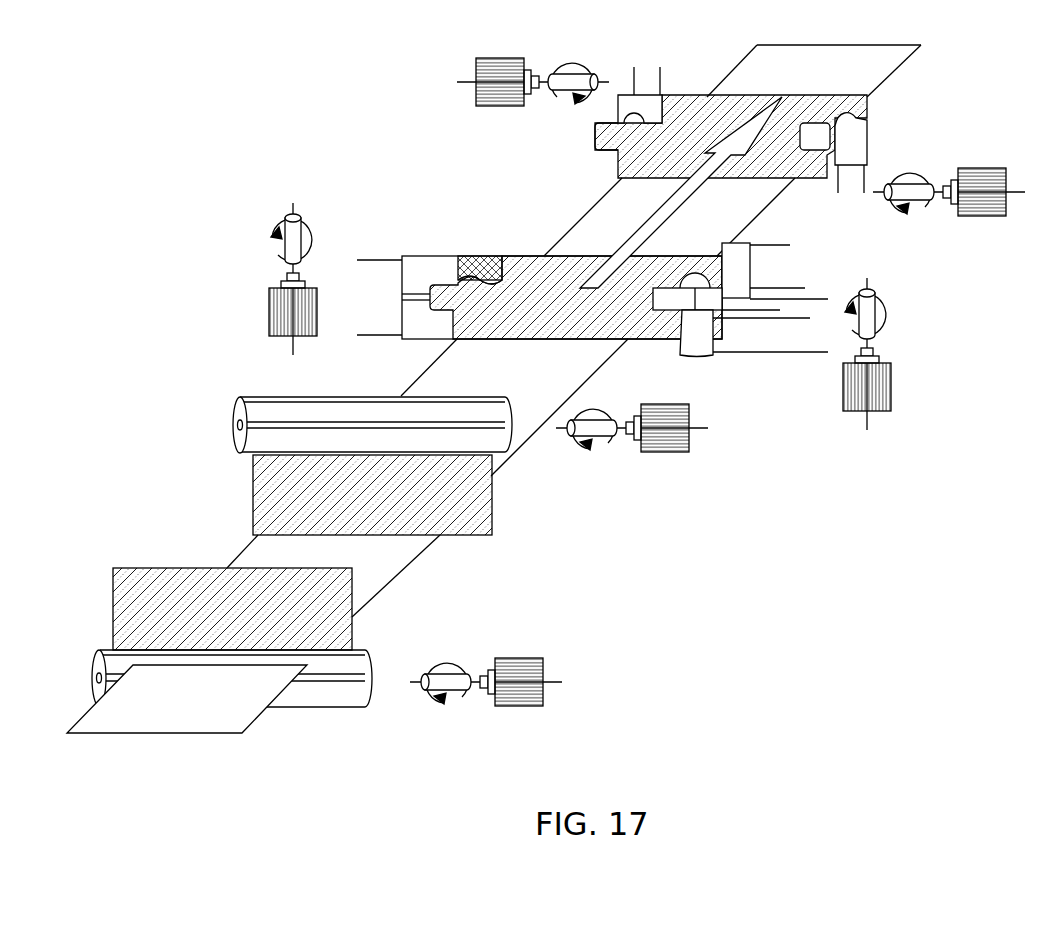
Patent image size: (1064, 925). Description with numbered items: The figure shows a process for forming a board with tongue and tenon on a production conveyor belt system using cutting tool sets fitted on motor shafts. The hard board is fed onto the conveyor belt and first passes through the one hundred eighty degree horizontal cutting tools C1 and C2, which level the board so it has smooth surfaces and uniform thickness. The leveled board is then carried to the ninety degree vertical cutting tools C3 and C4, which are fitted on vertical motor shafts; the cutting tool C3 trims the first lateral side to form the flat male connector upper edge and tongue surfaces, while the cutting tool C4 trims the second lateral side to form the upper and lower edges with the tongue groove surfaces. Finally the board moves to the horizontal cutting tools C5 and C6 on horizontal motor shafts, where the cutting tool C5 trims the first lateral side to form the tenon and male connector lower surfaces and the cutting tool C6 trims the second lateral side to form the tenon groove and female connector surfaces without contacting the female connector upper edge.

The horizontal cutting tool C1 is at (486, 697).
The horizontal cutting tool C2 is at (631, 443).
The vertical cutting tool C3 is at (316, 279).
The vertical cutting tool C4 is at (861, 346).
The horizontal cutting tool C5 is at (538, 67).
The horizontal cutting tool C6 is at (949, 177).